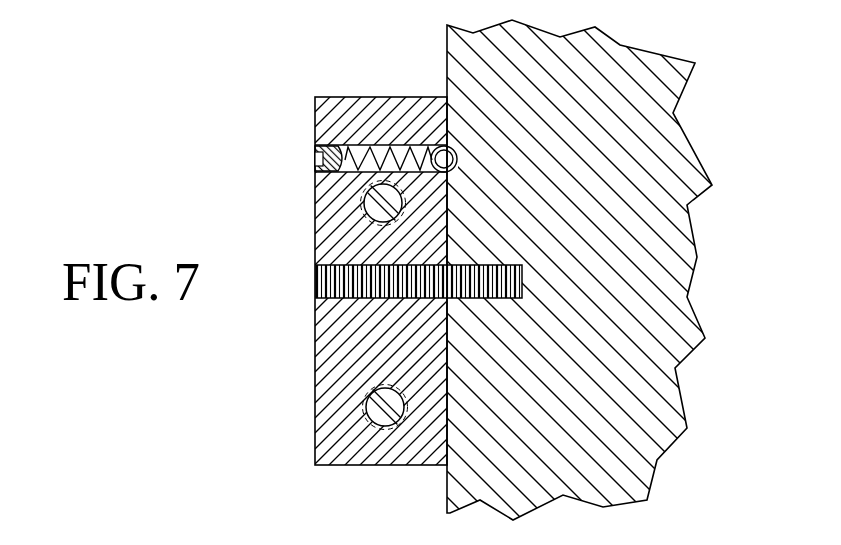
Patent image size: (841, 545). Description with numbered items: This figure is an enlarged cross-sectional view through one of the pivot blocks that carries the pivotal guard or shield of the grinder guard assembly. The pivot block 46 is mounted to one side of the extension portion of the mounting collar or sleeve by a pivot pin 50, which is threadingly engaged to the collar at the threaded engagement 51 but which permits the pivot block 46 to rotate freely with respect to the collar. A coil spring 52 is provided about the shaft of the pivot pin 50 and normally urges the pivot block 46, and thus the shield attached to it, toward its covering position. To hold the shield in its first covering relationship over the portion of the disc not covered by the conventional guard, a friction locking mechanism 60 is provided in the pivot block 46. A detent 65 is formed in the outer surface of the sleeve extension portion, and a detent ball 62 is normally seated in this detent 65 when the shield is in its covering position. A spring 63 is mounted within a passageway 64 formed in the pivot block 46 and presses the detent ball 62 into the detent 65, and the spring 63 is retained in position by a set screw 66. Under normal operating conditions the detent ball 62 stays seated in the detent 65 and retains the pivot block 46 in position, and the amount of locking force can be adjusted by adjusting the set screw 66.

The pivot block 46 is at (333, 420).
The pivot pin 50 is at (317, 240).
The threaded engagement 51 is at (523, 280).
The coil spring 52 is at (373, 298).
The friction locking mechanism 60 is at (316, 150).
The detent ball 62 is at (446, 150).
The spring 63 is at (362, 146).
The passageway 64 is at (363, 172).
The detent 65 is at (462, 162).
The set screw 66 is at (316, 168).